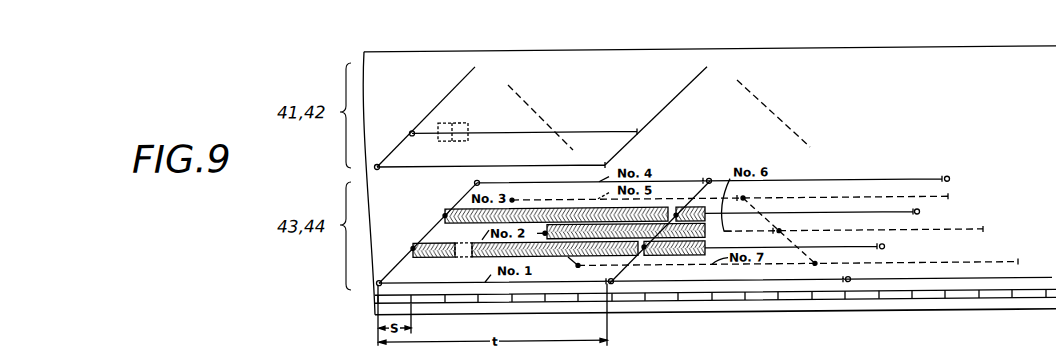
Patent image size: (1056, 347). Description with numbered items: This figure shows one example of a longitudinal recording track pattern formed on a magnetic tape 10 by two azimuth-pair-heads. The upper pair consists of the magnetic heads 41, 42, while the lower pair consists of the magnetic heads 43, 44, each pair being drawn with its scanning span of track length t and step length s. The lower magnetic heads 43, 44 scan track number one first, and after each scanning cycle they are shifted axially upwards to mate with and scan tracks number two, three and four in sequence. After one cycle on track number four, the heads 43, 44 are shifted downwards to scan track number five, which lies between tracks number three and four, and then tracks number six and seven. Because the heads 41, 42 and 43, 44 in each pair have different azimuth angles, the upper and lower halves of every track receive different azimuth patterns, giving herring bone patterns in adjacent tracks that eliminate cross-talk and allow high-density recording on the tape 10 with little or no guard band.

The magnetic tape 10 is at (908, 55).
The magnetic head 41 is at (447, 126).
The magnetic head 42 is at (458, 145).
The magnetic head 43 is at (453, 246).
The magnetic head 44 is at (456, 262).